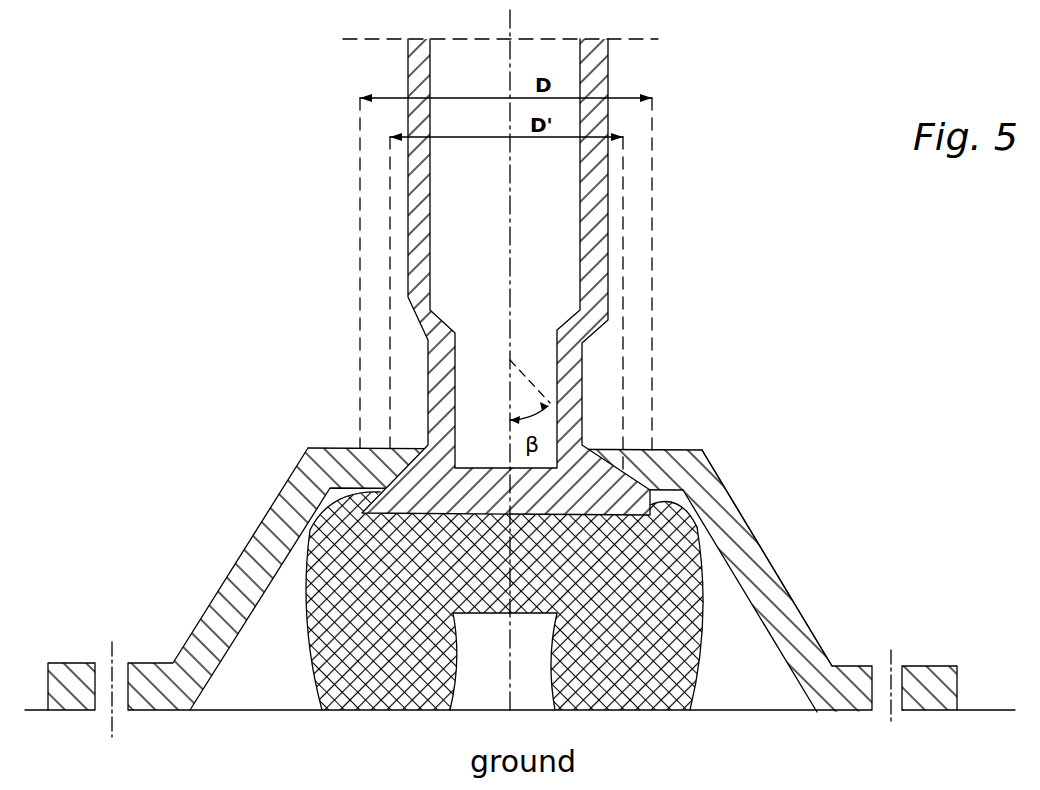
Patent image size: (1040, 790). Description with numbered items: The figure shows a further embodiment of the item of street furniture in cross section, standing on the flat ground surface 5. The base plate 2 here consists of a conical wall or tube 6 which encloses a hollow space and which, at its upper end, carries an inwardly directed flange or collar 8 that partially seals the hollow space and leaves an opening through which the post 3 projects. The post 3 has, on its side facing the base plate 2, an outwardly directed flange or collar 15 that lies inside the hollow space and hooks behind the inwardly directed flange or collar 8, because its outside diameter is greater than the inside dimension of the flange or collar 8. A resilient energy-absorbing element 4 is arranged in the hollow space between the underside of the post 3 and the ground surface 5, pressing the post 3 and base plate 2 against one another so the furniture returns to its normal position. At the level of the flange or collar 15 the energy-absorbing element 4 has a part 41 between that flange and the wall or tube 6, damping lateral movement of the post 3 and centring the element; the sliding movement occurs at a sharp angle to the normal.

The base plate 2 is at (502, 404).
The post 3 is at (593, 167).
The energy-absorbing element 4 is at (658, 698).
The ground surface 5 is at (520, 739).
The wall or tube 6 is at (738, 552).
The inwardly directed flange or collar 8 is at (670, 462).
The outwardly directed flange or collar 15 is at (613, 450).
The part of the energy-absorbing element 41 is at (673, 520).